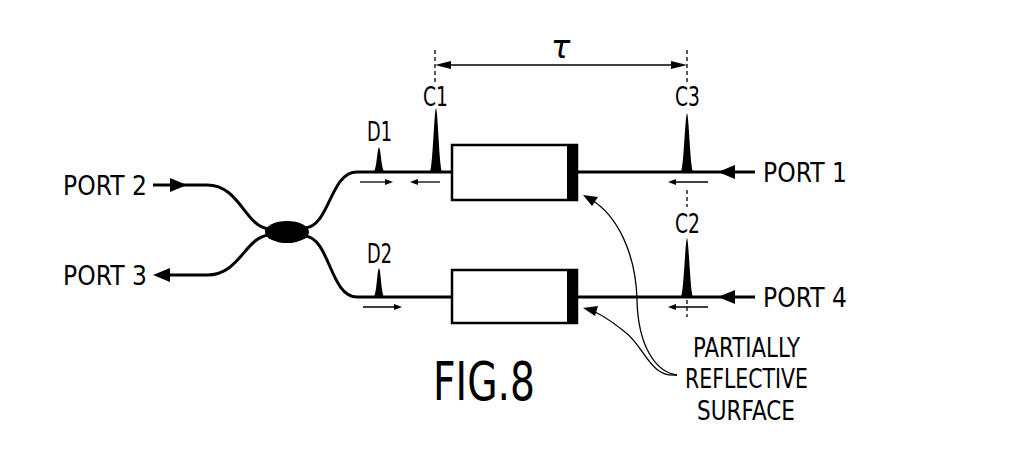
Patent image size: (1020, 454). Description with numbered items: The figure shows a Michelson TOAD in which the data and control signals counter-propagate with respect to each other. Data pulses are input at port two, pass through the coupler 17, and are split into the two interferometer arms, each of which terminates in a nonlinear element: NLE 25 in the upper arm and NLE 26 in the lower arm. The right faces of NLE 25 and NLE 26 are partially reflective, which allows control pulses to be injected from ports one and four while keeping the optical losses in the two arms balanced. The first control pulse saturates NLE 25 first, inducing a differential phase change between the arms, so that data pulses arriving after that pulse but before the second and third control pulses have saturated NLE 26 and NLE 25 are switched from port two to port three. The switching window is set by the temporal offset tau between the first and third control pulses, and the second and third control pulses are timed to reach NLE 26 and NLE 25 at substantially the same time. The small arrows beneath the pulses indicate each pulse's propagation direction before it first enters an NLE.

The coupler 17 is at (287, 245).
The NLE 25 is at (509, 145).
The NLE 26 is at (509, 270).